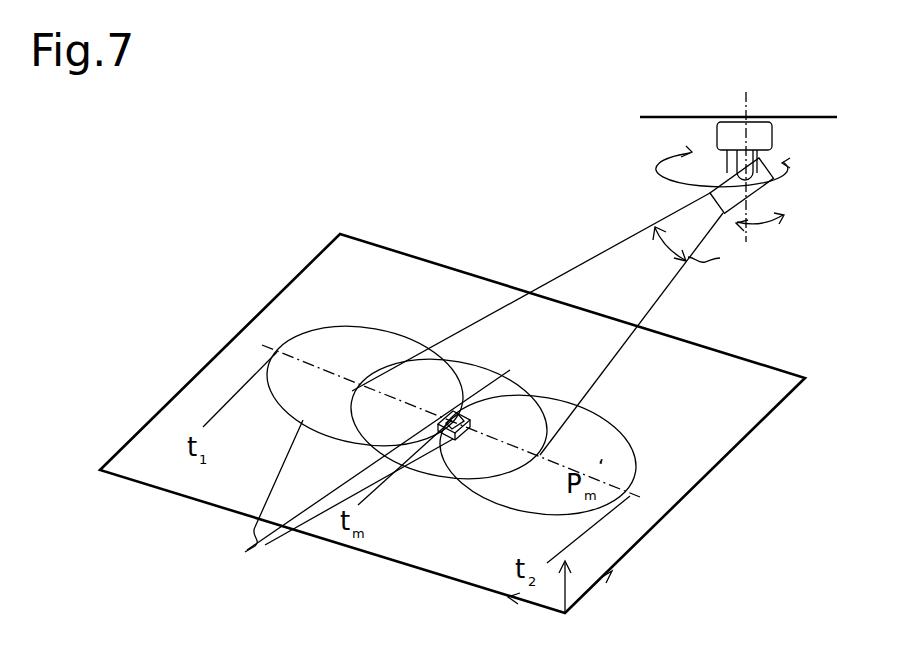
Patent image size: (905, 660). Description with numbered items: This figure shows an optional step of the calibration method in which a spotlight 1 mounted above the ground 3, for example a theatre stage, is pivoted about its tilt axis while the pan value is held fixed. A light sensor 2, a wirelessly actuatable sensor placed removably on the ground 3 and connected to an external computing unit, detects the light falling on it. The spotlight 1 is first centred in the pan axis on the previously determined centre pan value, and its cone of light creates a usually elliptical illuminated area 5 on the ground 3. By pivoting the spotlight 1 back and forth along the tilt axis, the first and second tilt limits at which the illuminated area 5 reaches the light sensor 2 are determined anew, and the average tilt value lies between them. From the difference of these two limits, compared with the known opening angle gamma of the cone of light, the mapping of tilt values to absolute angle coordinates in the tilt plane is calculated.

The spotlight 1 is at (758, 183).
The light sensor 2 is at (449, 432).
The ground 3 is at (215, 505).
The illuminated area 5 is at (368, 478).